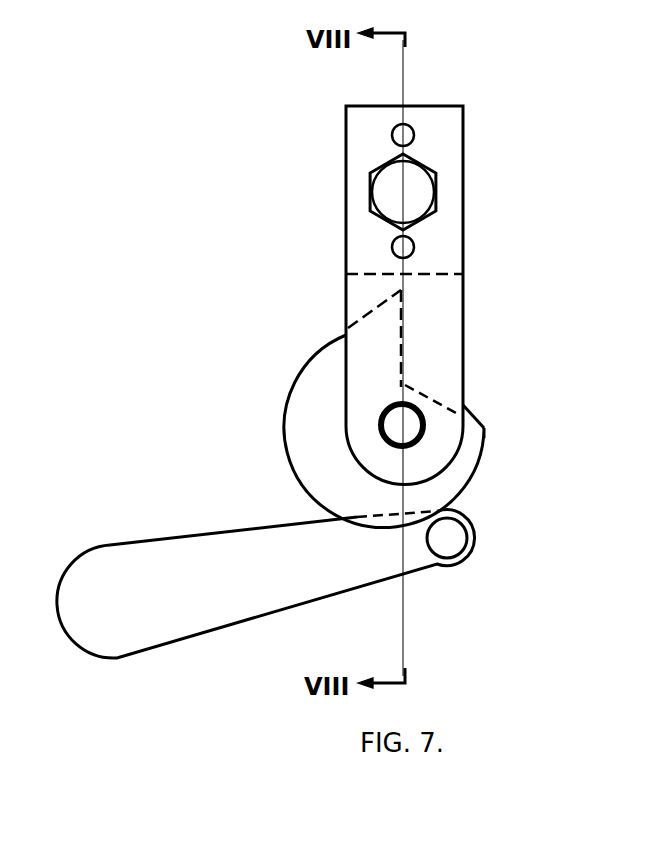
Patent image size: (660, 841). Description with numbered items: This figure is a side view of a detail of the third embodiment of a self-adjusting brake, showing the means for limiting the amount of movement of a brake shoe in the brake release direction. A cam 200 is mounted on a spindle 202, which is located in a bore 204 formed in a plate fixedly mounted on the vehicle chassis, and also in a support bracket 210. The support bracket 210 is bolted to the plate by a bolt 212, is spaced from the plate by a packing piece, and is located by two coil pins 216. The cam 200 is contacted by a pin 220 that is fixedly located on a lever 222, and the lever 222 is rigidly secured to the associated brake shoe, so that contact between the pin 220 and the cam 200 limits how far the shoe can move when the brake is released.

The cam 200 is at (317, 390).
The spindle 202 is at (410, 437).
The bore 204 is at (397, 404).
The support bracket 210 is at (437, 127).
The bolt 212 is at (417, 188).
The coil pins 216 is at (394, 142).
The pin 220 is at (453, 542).
The lever 222 is at (287, 548).